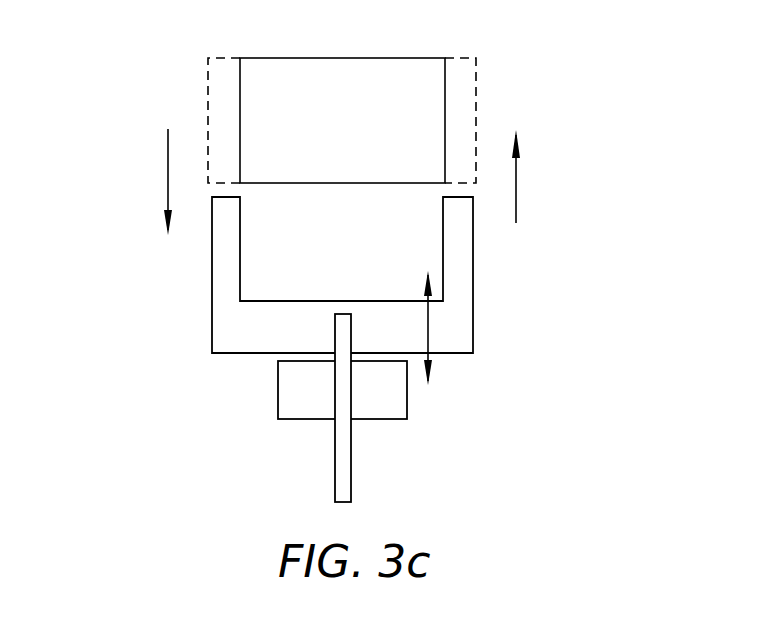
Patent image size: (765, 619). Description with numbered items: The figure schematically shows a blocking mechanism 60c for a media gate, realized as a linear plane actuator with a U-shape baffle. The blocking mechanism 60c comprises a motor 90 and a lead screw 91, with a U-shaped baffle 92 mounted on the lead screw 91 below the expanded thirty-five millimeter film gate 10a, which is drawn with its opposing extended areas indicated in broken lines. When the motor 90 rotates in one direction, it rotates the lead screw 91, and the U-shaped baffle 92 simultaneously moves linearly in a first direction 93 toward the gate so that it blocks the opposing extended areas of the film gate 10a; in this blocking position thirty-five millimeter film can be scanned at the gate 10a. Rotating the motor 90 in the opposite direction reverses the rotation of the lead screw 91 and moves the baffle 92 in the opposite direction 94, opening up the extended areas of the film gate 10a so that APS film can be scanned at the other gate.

The expanded 35 mm film gate 10a is at (318, 58).
The blocking mechanism 60c is at (124, 348).
The motor 90 is at (398, 393).
The lead screw 91 is at (343, 455).
The U-shaped baffle 92 is at (460, 312).
The first direction 93 is at (516, 192).
The direction 94 is at (168, 175).